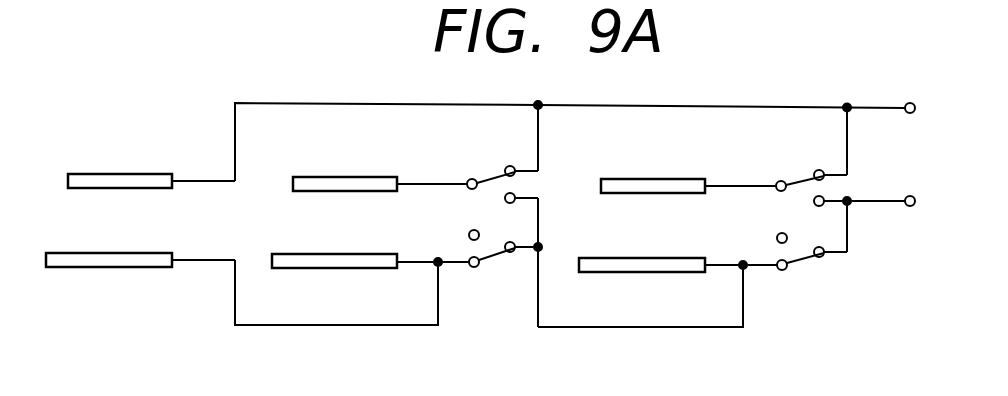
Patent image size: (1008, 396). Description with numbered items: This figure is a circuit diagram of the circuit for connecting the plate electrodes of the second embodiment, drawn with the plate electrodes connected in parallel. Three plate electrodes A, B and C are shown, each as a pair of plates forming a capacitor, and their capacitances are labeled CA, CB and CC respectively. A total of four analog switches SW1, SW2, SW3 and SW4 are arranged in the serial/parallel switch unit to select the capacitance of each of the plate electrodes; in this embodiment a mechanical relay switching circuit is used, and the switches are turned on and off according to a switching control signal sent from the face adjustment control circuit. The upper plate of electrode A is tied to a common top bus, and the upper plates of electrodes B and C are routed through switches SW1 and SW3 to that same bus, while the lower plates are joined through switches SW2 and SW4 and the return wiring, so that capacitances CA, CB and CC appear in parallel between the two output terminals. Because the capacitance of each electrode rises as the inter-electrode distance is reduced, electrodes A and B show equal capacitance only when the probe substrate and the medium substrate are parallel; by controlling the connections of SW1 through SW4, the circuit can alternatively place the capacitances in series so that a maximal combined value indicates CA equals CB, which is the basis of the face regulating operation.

The plate electrode A is at (151, 165).
The plate electrode B is at (380, 167).
The plate electrode C is at (688, 170).
The capacitance of plate electrode A CA is at (145, 238).
The capacitance of plate electrode B CB is at (370, 240).
The capacitance of plate electrode C CC is at (678, 243).
The analog switch SW1 is at (501, 168).
The analog switch SW2 is at (501, 267).
The analog switch SW3 is at (809, 171).
The analog switch SW4 is at (809, 273).